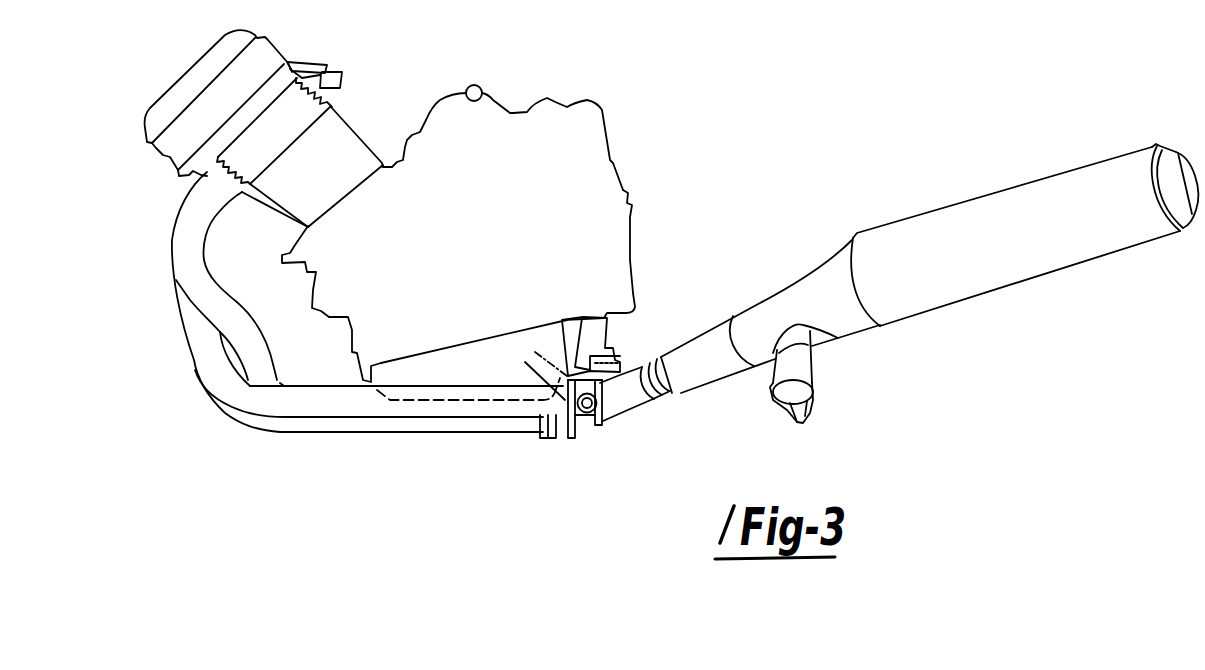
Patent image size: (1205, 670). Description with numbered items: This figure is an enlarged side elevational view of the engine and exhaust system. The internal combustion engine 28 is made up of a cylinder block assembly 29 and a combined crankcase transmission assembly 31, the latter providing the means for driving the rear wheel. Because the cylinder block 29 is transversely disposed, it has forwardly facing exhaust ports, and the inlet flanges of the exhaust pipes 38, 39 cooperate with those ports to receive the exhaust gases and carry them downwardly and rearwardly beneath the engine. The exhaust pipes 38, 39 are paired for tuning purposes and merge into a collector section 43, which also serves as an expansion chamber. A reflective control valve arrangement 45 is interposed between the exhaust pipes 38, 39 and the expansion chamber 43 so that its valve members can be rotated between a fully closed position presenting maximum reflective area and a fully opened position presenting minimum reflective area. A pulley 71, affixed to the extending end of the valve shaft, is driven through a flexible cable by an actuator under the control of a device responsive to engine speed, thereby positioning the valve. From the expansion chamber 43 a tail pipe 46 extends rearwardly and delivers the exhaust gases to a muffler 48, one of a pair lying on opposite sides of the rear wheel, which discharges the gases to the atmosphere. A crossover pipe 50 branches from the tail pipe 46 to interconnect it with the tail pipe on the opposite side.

The internal combustion engine 28 is at (613, 122).
The cylinder block assembly 29 is at (354, 126).
The crankcase transmission assembly 31 is at (633, 262).
The exhaust pipe 38 is at (370, 418).
The exhaust pipe 39 is at (292, 433).
The collector section 43 is at (652, 414).
The reflective control valve arrangement 45 is at (583, 465).
The tail pipe 46 is at (752, 307).
The muffler 48 is at (942, 213).
The crossover pipe 50 is at (813, 371).
The pulley 71 is at (586, 430).